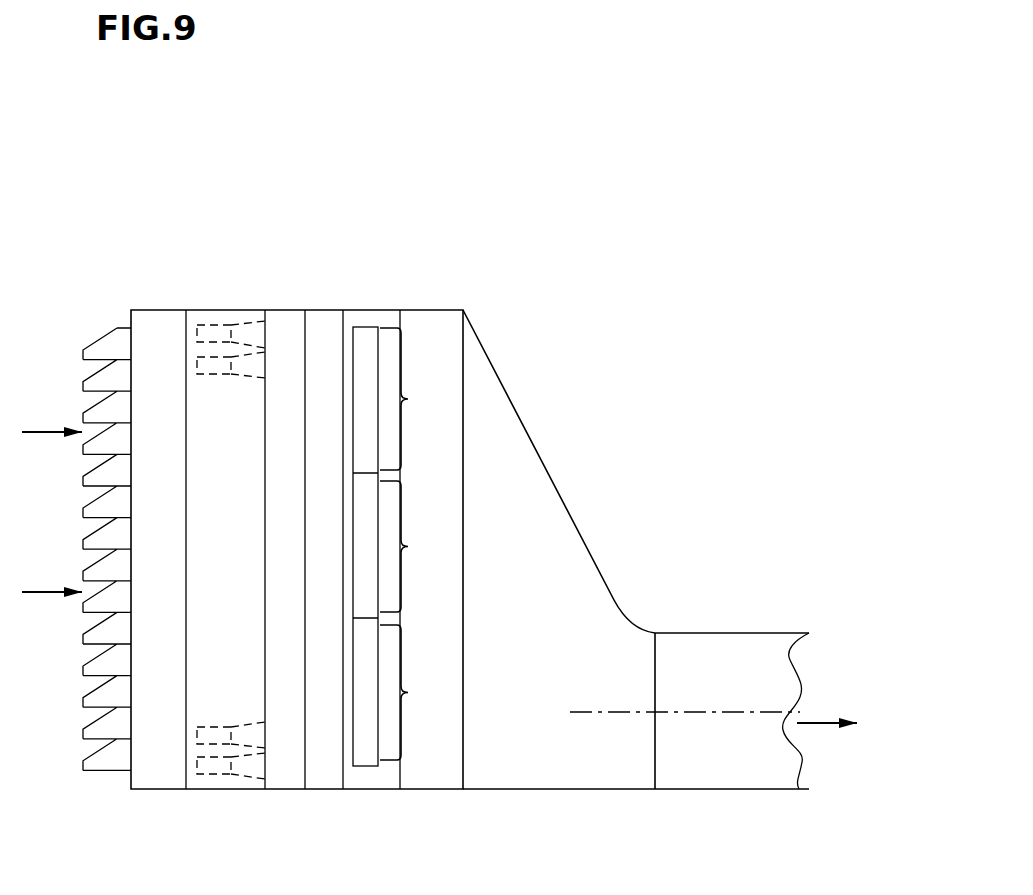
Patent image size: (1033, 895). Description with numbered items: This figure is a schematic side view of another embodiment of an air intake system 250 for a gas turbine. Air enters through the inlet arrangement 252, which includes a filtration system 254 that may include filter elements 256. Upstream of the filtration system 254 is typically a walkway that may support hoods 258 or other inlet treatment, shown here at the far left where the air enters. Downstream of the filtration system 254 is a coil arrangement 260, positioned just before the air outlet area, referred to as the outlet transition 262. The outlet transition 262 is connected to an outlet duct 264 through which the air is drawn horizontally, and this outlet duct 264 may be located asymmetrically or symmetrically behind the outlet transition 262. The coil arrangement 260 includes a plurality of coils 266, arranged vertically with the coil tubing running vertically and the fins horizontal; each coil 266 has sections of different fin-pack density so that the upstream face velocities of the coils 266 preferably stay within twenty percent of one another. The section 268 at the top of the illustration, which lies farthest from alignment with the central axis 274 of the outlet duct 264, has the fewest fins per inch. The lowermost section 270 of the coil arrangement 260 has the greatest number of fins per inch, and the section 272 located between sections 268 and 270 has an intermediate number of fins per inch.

The air intake system 250 is at (472, 212).
The inlet arrangement 252 is at (80, 507).
The filtration system 254 is at (229, 543).
The filter elements 256 is at (213, 376).
The hoods 258 is at (98, 341).
The coil arrangement 260 is at (382, 493).
The outlet transition 262 is at (497, 373).
The outlet duct 264 is at (725, 632).
The coils 266 is at (362, 390).
The section 268 is at (419, 399).
The section 270 is at (419, 692).
The section 272 is at (419, 546).
The central axis 274 is at (725, 711).